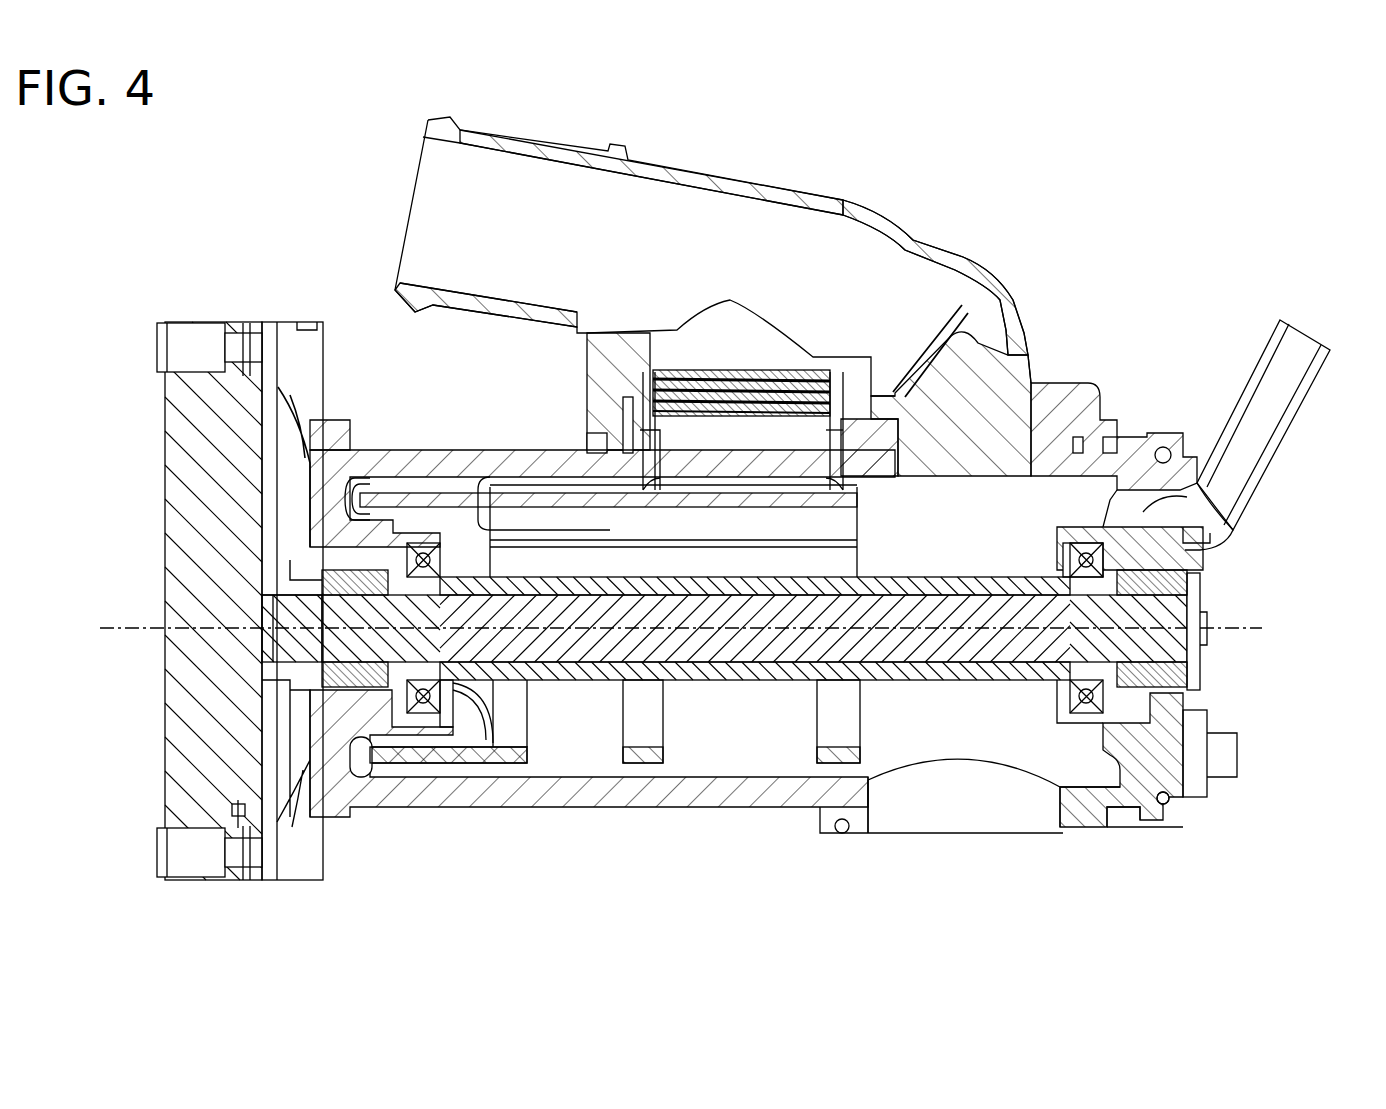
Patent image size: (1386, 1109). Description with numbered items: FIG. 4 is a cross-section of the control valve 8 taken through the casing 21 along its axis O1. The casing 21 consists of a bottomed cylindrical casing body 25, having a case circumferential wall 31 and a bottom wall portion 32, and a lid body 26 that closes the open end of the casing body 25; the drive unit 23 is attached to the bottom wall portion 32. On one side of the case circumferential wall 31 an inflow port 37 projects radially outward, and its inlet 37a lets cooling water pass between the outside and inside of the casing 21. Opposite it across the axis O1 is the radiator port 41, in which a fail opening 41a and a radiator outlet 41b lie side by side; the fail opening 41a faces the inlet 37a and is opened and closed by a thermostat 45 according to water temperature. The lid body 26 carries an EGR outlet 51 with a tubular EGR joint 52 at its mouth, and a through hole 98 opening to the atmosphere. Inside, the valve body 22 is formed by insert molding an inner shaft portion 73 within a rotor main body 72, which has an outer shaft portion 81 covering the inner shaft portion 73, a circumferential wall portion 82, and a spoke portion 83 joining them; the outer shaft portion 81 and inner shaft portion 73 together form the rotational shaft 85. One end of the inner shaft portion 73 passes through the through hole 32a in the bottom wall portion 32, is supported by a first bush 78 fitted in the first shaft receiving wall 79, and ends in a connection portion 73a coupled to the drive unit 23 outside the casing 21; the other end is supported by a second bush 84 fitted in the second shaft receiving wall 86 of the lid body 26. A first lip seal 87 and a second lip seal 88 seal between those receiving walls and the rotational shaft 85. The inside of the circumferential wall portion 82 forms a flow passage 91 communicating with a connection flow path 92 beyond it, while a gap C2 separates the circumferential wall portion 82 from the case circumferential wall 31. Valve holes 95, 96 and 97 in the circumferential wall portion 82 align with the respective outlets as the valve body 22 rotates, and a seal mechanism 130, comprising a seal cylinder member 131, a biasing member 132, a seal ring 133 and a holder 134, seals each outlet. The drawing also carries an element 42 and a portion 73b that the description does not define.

The control valve 8 is at (1157, 258).
The casing 21 is at (1135, 935).
The valve body 22 is at (1202, 650).
The drive unit 23 is at (178, 500).
The casing body 25 is at (1125, 812).
The lid body 26 is at (1170, 825).
The case circumferential wall 31 is at (695, 812).
The bottom wall portion 32 is at (330, 790).
The through hole 32a is at (265, 612).
The inflow port 37 is at (1105, 830).
The inlet 37a is at (1063, 800).
The radiator port 41 is at (1078, 405).
The fail opening 41a is at (1020, 415).
The radiator outlet 41b is at (657, 380).
The arm 42 is at (940, 248).
The thermostat 45 is at (1020, 335).
The EGR outlet 51 is at (1210, 500).
The EGR joint 52 is at (1292, 410).
The rotor main body 72 is at (643, 763).
The inner shaft portion 73 is at (687, 637).
The connection portion 73a is at (405, 585).
The second bearing 73b is at (405, 700).
The first bush 78 is at (380, 568).
The first shaft receiving wall 79 is at (385, 540).
The outer shaft portion 81 is at (575, 680).
The circumferential wall portion 82 is at (478, 720).
The spoke portion 83 is at (838, 553).
The second bush 84 is at (1170, 722).
The rotational shaft 85 is at (745, 685).
The second shaft receiving wall 86 is at (1140, 540).
The first lip seal 87 is at (447, 720).
The second lip seal 88 is at (1185, 585).
The flow passage 91 is at (607, 528).
The connection flow path 92 is at (972, 717).
The valve hole 95 is at (842, 760).
The valve hole 96 is at (445, 500).
The valve hole 97 is at (530, 700).
The through hole 98 is at (1210, 625).
The seal mechanism 130 is at (727, 366).
The seal cylinder member 131 is at (698, 400).
The biasing member 132 is at (808, 385).
The seal ring 133 is at (643, 445).
The holder 134 is at (823, 380).
The gap C2 is at (470, 485).
The axis O1 is at (1262, 607).